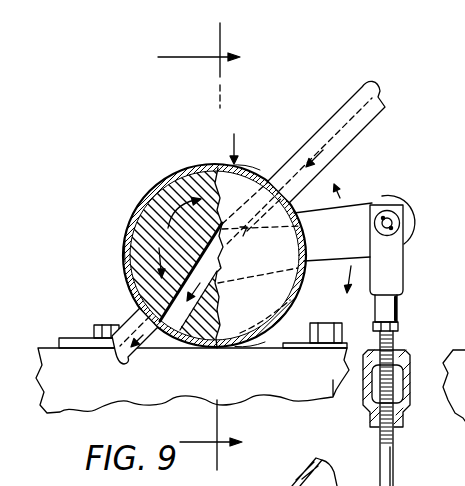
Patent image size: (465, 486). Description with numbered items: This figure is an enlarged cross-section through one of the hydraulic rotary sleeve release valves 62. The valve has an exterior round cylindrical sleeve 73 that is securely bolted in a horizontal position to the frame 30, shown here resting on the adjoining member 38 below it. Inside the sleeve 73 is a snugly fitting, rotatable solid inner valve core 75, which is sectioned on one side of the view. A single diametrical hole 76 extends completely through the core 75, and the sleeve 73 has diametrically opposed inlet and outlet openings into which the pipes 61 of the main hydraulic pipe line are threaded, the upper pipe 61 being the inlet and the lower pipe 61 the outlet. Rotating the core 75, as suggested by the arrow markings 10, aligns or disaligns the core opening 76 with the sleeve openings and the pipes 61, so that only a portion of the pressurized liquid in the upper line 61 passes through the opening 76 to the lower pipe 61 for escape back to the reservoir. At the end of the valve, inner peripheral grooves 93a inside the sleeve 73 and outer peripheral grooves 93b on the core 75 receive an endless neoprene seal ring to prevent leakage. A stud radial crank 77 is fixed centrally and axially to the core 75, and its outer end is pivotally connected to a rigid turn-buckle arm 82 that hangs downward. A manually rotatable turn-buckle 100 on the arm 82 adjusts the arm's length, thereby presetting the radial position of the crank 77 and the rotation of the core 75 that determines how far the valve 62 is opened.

The rotation angle indication 10 is at (200, 243).
The frame 30 is at (255, 408).
The mounting pad and bolt 38 is at (88, 388).
The main hydraulic pipe line 61 is at (313, 126).
The hydraulic rotary sleeve release valve 62 is at (235, 134).
The exterior round cylindrical sleeve 73 is at (192, 166).
The rotatable solid inner valve core 75 is at (133, 242).
The diametrical hole 76 is at (305, 232).
The stud radial crank 77 is at (355, 210).
The turn-buckle arm 82 is at (393, 440).
The inner peripheral grooves 93a is at (250, 166).
The outer peripheral grooves 93b is at (253, 352).
The turn-buckle 100 is at (366, 410).